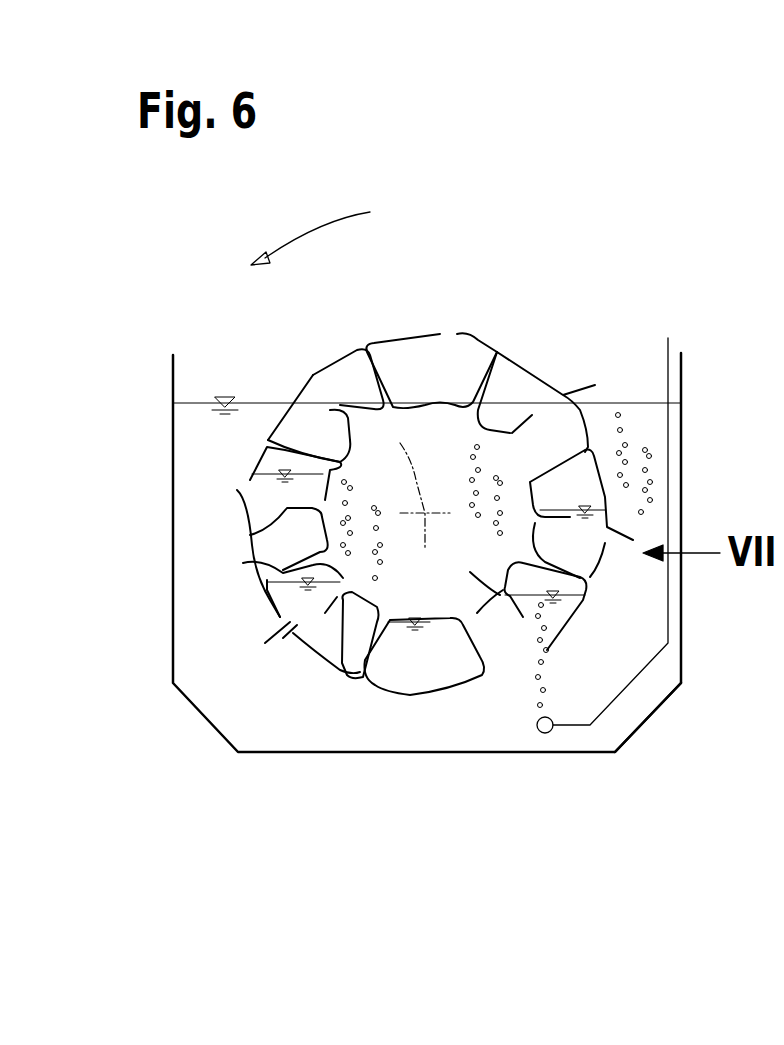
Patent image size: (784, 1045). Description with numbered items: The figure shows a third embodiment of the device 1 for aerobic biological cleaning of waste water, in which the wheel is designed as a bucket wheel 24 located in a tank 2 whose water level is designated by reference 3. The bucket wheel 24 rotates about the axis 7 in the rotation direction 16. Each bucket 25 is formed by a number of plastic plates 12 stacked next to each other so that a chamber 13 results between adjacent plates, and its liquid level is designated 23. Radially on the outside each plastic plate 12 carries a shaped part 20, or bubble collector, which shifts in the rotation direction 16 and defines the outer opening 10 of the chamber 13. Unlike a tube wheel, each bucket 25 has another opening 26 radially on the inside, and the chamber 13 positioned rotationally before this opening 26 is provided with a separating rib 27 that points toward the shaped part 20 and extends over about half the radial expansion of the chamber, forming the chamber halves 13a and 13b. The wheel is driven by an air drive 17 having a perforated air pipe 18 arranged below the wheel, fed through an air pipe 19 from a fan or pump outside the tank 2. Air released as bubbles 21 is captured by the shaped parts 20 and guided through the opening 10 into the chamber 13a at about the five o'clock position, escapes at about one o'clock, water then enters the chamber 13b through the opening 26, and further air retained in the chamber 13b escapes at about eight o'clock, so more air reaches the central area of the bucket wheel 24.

The device 1 is at (238, 315).
The tank 2 is at (681, 463).
The water level 3 is at (193, 400).
The axis 7 is at (421, 484).
The opening 10 is at (313, 368).
The plastic plate 12 is at (440, 710).
The chamber 13 is at (423, 625).
The chamber half 13a is at (337, 445).
The chamber half 13b is at (365, 396).
The rotation direction 16 is at (312, 228).
The air drive 17 is at (629, 697).
The air pipe 18 is at (540, 733).
The air pipe 19 is at (681, 605).
The shaped part 20 is at (315, 377).
The bubbles 21 is at (473, 436).
The liquid level 23 is at (283, 573).
The bucket wheel 24 is at (562, 335).
The bucket 25 is at (480, 318).
The opening 26 is at (355, 422).
The separating rib 27 is at (433, 370).